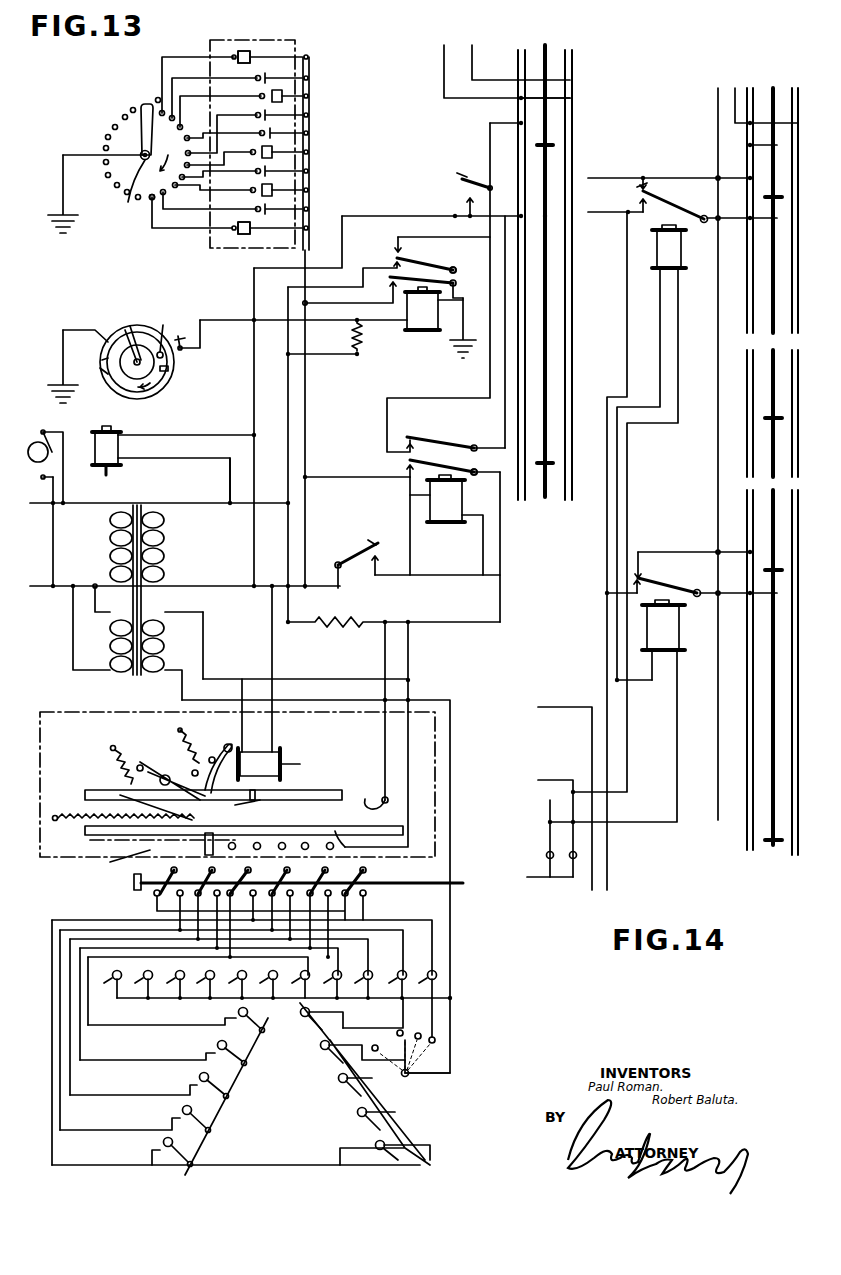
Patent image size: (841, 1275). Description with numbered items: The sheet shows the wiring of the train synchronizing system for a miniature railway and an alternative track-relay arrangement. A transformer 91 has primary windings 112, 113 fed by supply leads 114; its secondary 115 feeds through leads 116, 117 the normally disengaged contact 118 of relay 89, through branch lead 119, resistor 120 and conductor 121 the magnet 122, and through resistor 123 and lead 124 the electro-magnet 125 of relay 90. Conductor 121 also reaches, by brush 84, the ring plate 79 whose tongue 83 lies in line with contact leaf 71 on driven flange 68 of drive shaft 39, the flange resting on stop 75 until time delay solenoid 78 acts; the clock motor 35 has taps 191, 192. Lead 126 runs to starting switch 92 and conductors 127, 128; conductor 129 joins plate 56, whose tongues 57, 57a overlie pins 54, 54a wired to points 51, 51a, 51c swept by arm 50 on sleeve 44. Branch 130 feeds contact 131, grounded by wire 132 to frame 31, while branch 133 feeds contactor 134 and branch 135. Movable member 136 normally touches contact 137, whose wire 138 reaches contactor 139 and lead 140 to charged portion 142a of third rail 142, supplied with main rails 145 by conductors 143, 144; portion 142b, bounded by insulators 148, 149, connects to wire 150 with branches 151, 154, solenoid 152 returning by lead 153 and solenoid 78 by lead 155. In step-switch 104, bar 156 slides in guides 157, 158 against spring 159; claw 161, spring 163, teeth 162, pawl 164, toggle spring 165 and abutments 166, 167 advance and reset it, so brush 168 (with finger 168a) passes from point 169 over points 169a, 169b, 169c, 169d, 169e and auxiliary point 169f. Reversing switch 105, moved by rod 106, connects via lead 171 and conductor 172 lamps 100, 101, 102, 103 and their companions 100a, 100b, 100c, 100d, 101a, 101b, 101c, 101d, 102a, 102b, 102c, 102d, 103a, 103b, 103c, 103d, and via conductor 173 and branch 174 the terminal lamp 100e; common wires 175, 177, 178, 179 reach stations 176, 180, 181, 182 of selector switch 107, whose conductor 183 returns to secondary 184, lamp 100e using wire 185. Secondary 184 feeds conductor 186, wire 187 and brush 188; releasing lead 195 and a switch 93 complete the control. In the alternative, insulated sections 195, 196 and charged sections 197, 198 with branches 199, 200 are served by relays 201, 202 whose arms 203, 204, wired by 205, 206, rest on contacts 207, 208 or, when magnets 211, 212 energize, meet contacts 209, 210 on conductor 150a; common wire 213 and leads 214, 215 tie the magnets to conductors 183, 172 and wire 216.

In FIG. 13, the casing 31 is at (66, 210).
In FIG. 13, the electric motor 35 is at (40, 438).
In FIG. 13, the drive shaft 39 is at (130, 332).
In FIG. 13, the sleeve 44 is at (126, 186).
In FIG. 13, the resilient contact arm 50 is at (152, 141).
In FIG. 13, the contact point 51 is at (146, 108).
In FIG. 13, the contact point 51a is at (152, 199).
In FIG. 13, the contact point 51c is at (160, 108).
In FIG. 13, the metallic pin 54 is at (234, 44).
In FIG. 13, the metallic pin 54a is at (230, 225).
In FIG. 13, the resilient metallic plate 56 is at (312, 212).
In FIG. 13, the resilient tongue 57 is at (245, 50).
In FIG. 13, the resilient tongue 57a is at (238, 236).
In FIG. 13, the driven flange 68 is at (117, 324).
In FIG. 13, the resilient contact leaf 71 is at (168, 360).
In FIG. 13, the stationary stop 75 is at (166, 328).
In FIG. 13, the time delay solenoid 78 is at (118, 450).
In FIG. 13, the conducting ring plate 79 is at (166, 390).
In FIG. 13, the tongue 83 is at (110, 385).
In FIG. 13, the spring brush 84 is at (186, 360).
In FIG. 13, the relay 89 is at (454, 272).
In FIG. 13, the relay 90 is at (484, 458).
In FIG. 13, the transformer 91 is at (140, 502).
In FIG. 13, the push-button starting switch 92 is at (350, 548).
In FIG. 13, the switch 93 is at (458, 188).
In FIG. 13, the lamp 100 is at (106, 983).
In FIG. 13, the lamp 100a is at (138, 983).
In FIG. 13, the lamp 100b is at (169, 983).
In FIG. 13, the lamp 100c is at (198, 984).
In FIG. 13, the lamp 100d is at (230, 984).
In FIG. 13, the common terminal lamp 100e is at (261, 984).
In FIG. 13, the lamp 101 is at (430, 971).
In FIG. 14, the lamp 101 is at (582, 868).
In FIG. 13, the lamp 101a is at (400, 971).
In FIG. 14, the lamp 101a is at (546, 855).
In FIG. 13, the lamp 101b is at (366, 970).
In FIG. 13, the lamp 101c is at (336, 971).
In FIG. 13, the lamp 101d is at (295, 984).
In FIG. 13, the lamp 102 is at (162, 1140).
In FIG. 13, the lamp 102a is at (182, 1108).
In FIG. 13, the lamp 102b is at (200, 1075).
In FIG. 13, the lamp 102c is at (218, 1043).
In FIG. 13, the lamp 102d is at (238, 1010).
In FIG. 13, the lamp 103 is at (374, 1142).
In FIG. 13, the lamp 103a is at (356, 1109).
In FIG. 13, the lamp 103b is at (338, 1076).
In FIG. 13, the lamp 103c is at (318, 1043).
In FIG. 13, the lamp 103d is at (298, 1010).
In FIG. 13, the step-switch 104 is at (120, 860).
In FIG. 13, the reversing switch 105 is at (158, 870).
In FIG. 13, the rod 106 is at (136, 884).
In FIG. 13, the four-station selector switch 107 is at (406, 1077).
In FIG. 13, the primary winding 112 is at (128, 504).
In FIG. 13, the primary winding 113 is at (110, 672).
In FIG. 13, the supply leads 114 is at (47, 546).
In FIG. 13, the secondary winding 115 is at (164, 548).
In FIG. 13, the lead 116 is at (216, 499).
In FIG. 13, the lead 117 is at (378, 274).
In FIG. 13, the normally disengaged contact 118 is at (390, 254).
In FIG. 13, the branch lead 119 is at (320, 359).
In FIG. 13, the resistor 120 is at (355, 342).
In FIG. 13, the conductor 121 is at (240, 316).
In FIG. 13, the magnet 122 is at (430, 314).
In FIG. 13, the resistor 123 is at (335, 628).
In FIG. 13, the lead 124 is at (442, 625).
In FIG. 13, the electro-magnet 125 is at (460, 500).
In FIG. 13, the lead 126 is at (220, 582).
In FIG. 13, the conductor 127 is at (399, 582).
In FIG. 13, the conductor 128 is at (412, 548).
In FIG. 13, the conductor 129 is at (308, 437).
In FIG. 13, the branch 130 is at (329, 308).
In FIG. 13, the normally open contact combination 131 is at (393, 284).
In FIG. 13, the wire 132 is at (476, 295).
In FIG. 13, the branch 133 is at (366, 485).
In FIG. 13, the contactor 134 is at (406, 469).
In FIG. 13, the branch 135 is at (503, 547).
In FIG. 13, the movable switch member 136 is at (431, 261).
In FIG. 13, the contact 137 is at (389, 238).
In FIG. 13, the wire 138 is at (421, 238).
In FIG. 13, the contactor 139 is at (399, 437).
In FIG. 13, the lead 140 is at (489, 143).
In FIG. 14, the lead 140 is at (624, 179).
In FIG. 13, the third rail 142 is at (545, 54).
In FIG. 14, the third rail 142 is at (772, 88).
In FIG. 13, the normally charged portion 142a is at (545, 128).
In FIG. 13, the insulated portion 142b is at (547, 290).
In FIG. 13, the conductor 143 is at (443, 90).
In FIG. 14, the conductor 143 is at (717, 112).
In FIG. 13, the conductor 144 is at (472, 77).
In FIG. 14, the conductor 144 is at (734, 87).
In FIG. 13, the main rails 145 is at (546, 111).
In FIG. 13, the terminal insulating member 148 is at (554, 148).
In FIG. 13, the terminal insulating member 149 is at (538, 496).
In FIG. 13, the wire 150 is at (370, 216).
In FIG. 14, the wire 150 is at (616, 222).
In FIG. 14, the conductor 150a is at (626, 352).
In FIG. 13, the branch 151 is at (470, 237).
In FIG. 13, the solenoid 152 is at (268, 740).
In FIG. 13, the lead 153 is at (274, 660).
In FIG. 13, the branch 154 is at (202, 436).
In FIG. 13, the lead 155 is at (164, 459).
In FIG. 13, the metallic bar 156 is at (360, 838).
In FIG. 13, the insulating guide 157 is at (314, 784).
In FIG. 13, the insulating guide 158 is at (84, 832).
In FIG. 13, the tension spring 159 is at (74, 810).
In FIG. 13, the swinging claw 161 is at (200, 776).
In FIG. 13, the ratchet teeth 162 is at (236, 808).
In FIG. 13, the spring 163 is at (192, 736).
In FIG. 13, the wide faced pawl 164 is at (172, 766).
In FIG. 13, the toggle spring 165 is at (136, 748).
In FIG. 13, the abutment 166 is at (112, 790).
In FIG. 13, the abutment 167 is at (280, 782).
In FIG. 13, the brush 168 is at (204, 838).
In FIG. 13, the contact finger 168a is at (95, 850).
In FIG. 13, the contact point 169 is at (222, 840).
In FIG. 13, the contact point 169a is at (222, 876).
In FIG. 13, the contact point 169b is at (258, 877).
In FIG. 13, the contact point 169c is at (286, 848).
In FIG. 13, the contact point 169d is at (309, 878).
In FIG. 13, the contact point 169e is at (348, 878).
In FIG. 13, the auxiliary point 169f is at (355, 850).
In FIG. 13, the lead 171 is at (157, 906).
In FIG. 13, the conductor 172 is at (86, 914).
In FIG. 14, the conductor 172 is at (549, 779).
In FIG. 13, the conductor 173 is at (376, 892).
In FIG. 13, the branch 174 is at (290, 962).
In FIG. 13, the common wire 175 is at (348, 1016).
In FIG. 13, the station 176 is at (409, 1024).
In FIG. 13, the common wire 177 is at (434, 996).
In FIG. 13, the common wire 178 is at (258, 1082).
In FIG. 13, the common wire 179 is at (418, 1152).
In FIG. 13, the station 180 is at (433, 1035).
In FIG. 13, the station 181 is at (372, 1051).
In FIG. 13, the station 182 is at (389, 1036).
In FIG. 13, the conductor 183 is at (455, 713).
In FIG. 14, the conductor 183 is at (559, 706).
In FIG. 13, the secondary winding 184 is at (168, 663).
In FIG. 13, the wire 185 is at (452, 1008).
In FIG. 13, the conductor 186 is at (324, 684).
In FIG. 13, the wire 187 is at (383, 740).
In FIG. 13, the brush 188 is at (383, 795).
In FIG. 13, the tap 191 is at (64, 487).
In FIG. 13, the tap 192 is at (60, 586).
In FIG. 13, the releasing lead 195 is at (412, 680).
In FIG. 14, the releasing lead 195 is at (770, 292).
In FIG. 14, the insulated section 196 is at (770, 665).
In FIG. 14, the charged section 197 is at (750, 147).
In FIG. 14, the charged section 198 is at (768, 512).
In FIG. 14, the branch 199 is at (742, 167).
In FIG. 14, the branch 200 is at (744, 553).
In FIG. 14, the relay 201 is at (692, 232).
In FIG. 14, the relay 202 is at (690, 605).
In FIG. 14, the switch arm 203 is at (679, 202).
In FIG. 14, the switch arm 204 is at (674, 593).
In FIG. 14, the wire 205 is at (730, 228).
In FIG. 14, the wire 206 is at (728, 610).
In FIG. 14, the contact 207 is at (652, 185).
In FIG. 14, the contact 208 is at (648, 577).
In FIG. 14, the contact 209 is at (635, 205).
In FIG. 14, the contact 210 is at (620, 583).
In FIG. 14, the relay magnet 211 is at (658, 268).
In FIG. 14, the relay magnet 212 is at (702, 660).
In FIG. 14, the common wire 213 is at (660, 395).
In FIG. 14, the lead 214 is at (679, 352).
In FIG. 14, the lead 215 is at (676, 768).
In FIG. 13, the wire 216 is at (410, 940).
In FIG. 14, the wire 216 is at (550, 800).